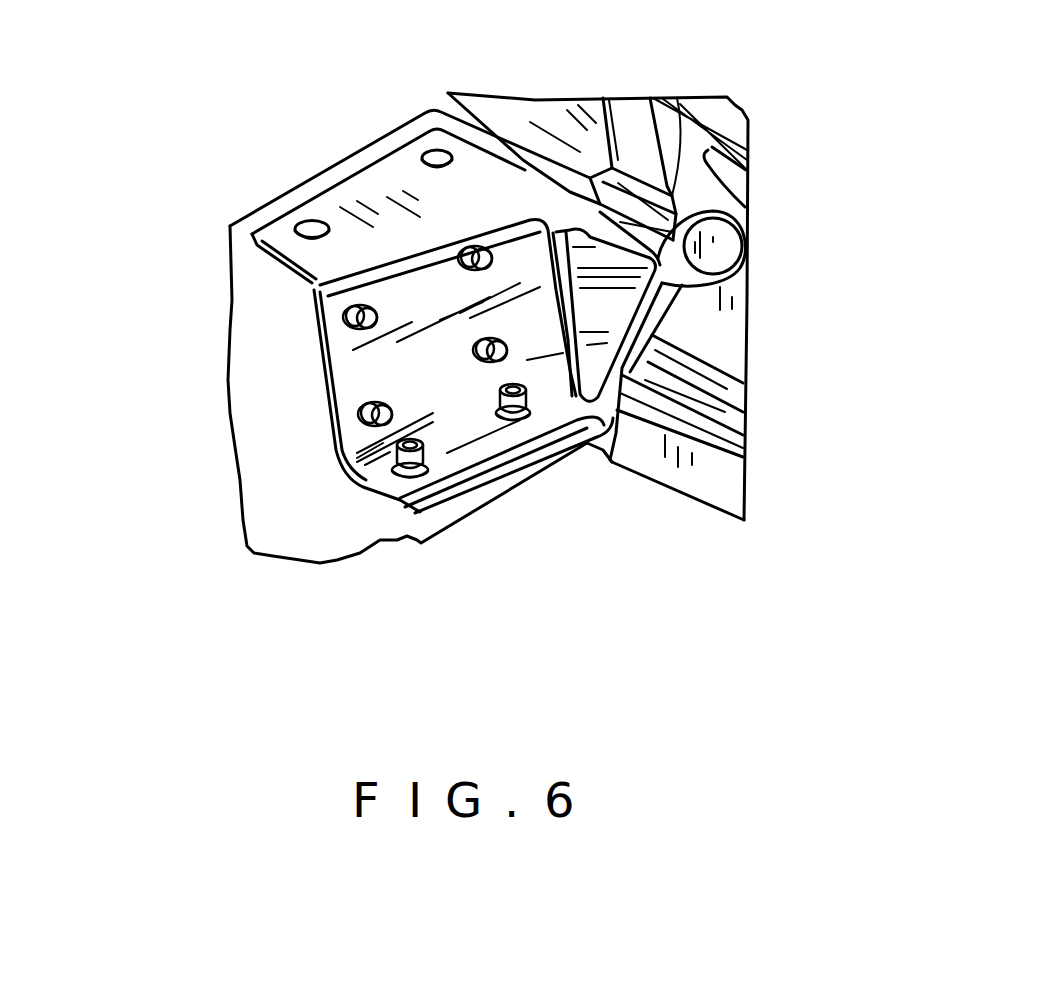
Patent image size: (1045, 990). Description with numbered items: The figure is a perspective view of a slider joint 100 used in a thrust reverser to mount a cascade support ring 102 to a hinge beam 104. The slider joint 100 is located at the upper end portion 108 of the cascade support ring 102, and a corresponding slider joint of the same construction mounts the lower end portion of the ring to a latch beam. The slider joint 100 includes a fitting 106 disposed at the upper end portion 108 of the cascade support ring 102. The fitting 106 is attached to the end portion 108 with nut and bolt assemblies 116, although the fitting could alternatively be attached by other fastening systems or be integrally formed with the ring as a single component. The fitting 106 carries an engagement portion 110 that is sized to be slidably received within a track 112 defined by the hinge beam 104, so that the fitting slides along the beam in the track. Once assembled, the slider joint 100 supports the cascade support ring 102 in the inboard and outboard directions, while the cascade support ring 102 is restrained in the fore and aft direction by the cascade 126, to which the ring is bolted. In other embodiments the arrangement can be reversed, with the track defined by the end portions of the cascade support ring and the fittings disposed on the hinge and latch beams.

The slider joint 100 is at (289, 108).
The cascade support ring 102 is at (317, 182).
The hinge beam 104 is at (749, 130).
The fitting 106 is at (320, 287).
The upper end portion 108 is at (232, 224).
The engagement portion 110 is at (713, 253).
The track 112 is at (687, 222).
The nut and bolt assemblies 116 is at (428, 470).
The cascade 126 is at (440, 110).